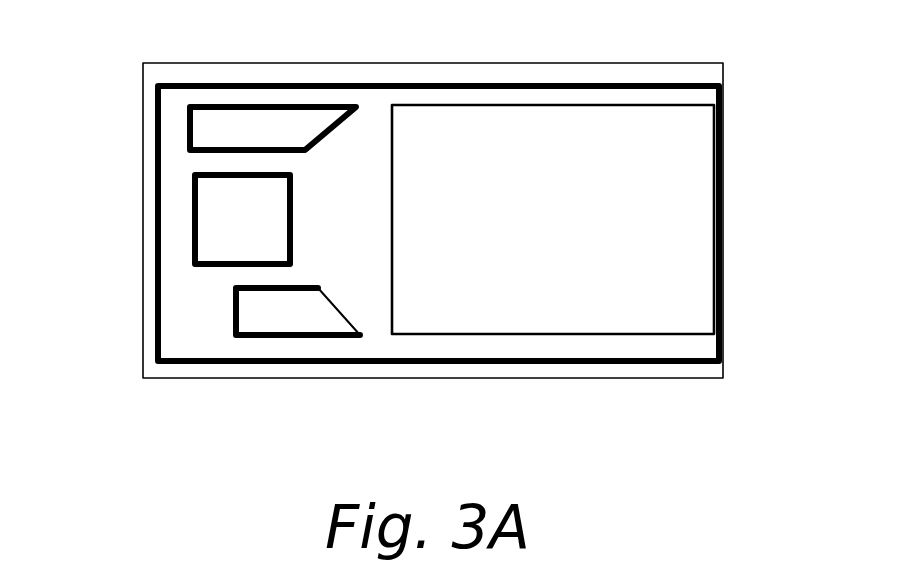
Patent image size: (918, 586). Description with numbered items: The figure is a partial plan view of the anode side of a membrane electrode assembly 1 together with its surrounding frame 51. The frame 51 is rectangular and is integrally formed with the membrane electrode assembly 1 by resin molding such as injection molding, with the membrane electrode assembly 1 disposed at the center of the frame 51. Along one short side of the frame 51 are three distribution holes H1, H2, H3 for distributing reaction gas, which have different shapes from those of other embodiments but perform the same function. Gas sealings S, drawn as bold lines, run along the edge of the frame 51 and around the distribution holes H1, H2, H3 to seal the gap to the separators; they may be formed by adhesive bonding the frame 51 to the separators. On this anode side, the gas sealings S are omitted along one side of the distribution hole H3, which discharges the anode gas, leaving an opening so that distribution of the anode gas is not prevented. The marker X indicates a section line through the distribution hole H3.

The membrane electrode assembly 1 is at (690, 226).
The frame 51 is at (360, 61).
The gas sealings S is at (270, 104).
The distribution hole H1 is at (200, 128).
The distribution hole H2 is at (214, 206).
The distribution hole H3 is at (245, 305).
The section line X- X is at (279, 317).